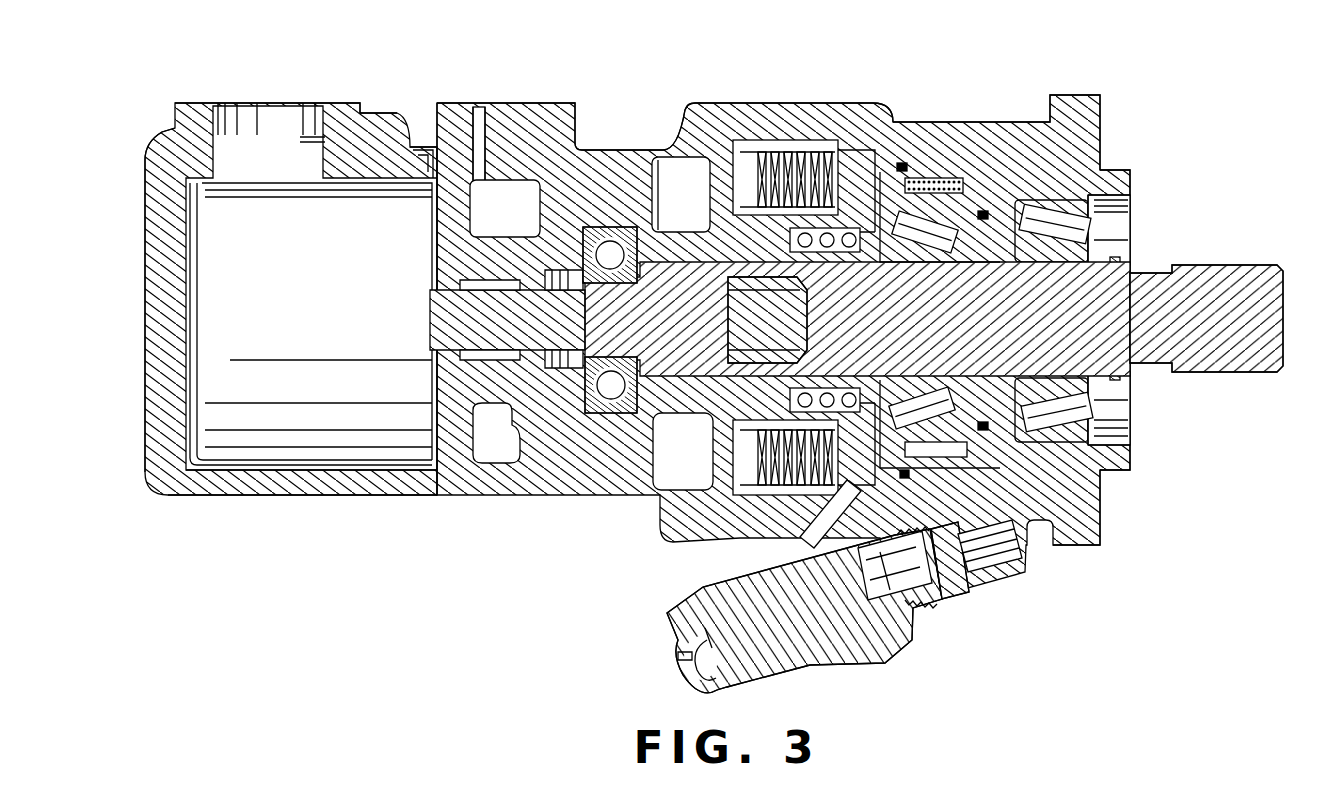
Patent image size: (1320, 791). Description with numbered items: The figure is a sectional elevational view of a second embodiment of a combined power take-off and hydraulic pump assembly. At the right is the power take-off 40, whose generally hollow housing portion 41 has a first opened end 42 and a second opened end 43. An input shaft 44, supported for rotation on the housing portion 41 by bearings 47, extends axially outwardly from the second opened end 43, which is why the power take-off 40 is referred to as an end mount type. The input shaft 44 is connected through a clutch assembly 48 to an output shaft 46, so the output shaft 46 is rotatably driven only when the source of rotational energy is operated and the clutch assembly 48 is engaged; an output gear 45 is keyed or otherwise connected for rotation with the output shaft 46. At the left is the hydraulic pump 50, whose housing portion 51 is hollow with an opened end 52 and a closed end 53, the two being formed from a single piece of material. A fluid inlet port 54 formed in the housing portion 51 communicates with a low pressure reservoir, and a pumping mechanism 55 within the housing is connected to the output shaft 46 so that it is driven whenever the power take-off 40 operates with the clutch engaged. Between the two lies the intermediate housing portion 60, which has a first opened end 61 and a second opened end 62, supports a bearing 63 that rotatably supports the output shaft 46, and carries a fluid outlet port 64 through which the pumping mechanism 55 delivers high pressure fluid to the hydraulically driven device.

The power take-off 40 is at (661, 352).
The housing portion 41 is at (905, 108).
The first opened end 42 is at (700, 100).
The second opened end 43 is at (1132, 183).
The input shaft 44 is at (1207, 340).
The output gear 45 is at (793, 105).
The output shaft 46 is at (680, 288).
The bearings 47 is at (1060, 235).
The clutch assembly 48 is at (697, 466).
The hydraulic pump 50 is at (247, 303).
The housing portion 51 is at (268, 490).
The opened end 52 is at (455, 497).
The closed end 53 is at (147, 304).
The fluid inlet port 54 is at (235, 103).
The pumping mechanism 55 is at (299, 317).
The intermediate housing portion 60 is at (831, 327).
The first opened end 61 is at (748, 566).
The second opened end 62 is at (395, 112).
The bearing 63 is at (607, 392).
The fluid outlet port 64 is at (491, 107).